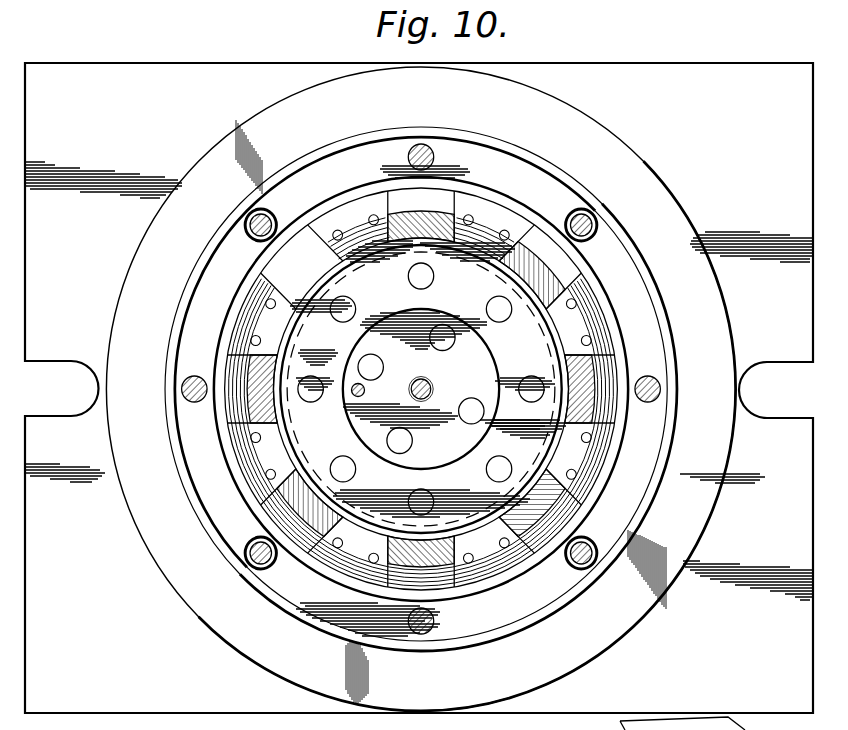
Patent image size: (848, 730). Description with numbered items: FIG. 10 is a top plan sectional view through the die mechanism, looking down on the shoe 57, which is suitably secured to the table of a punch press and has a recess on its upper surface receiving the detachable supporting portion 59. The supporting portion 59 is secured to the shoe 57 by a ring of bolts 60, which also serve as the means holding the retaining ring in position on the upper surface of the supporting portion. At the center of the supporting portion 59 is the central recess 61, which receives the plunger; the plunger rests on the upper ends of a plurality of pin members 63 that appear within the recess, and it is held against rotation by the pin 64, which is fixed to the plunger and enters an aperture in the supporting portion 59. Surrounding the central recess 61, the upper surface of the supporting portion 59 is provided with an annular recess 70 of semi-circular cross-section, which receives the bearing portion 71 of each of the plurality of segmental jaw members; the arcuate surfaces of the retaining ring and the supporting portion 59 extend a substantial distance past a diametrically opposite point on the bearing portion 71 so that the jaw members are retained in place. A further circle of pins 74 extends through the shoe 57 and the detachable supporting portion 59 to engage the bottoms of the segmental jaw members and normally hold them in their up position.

The shoe 57 is at (419, 396).
The detachable supporting portion 59 is at (661, 321).
The bolts 60 is at (422, 146).
The central recess 61 is at (492, 363).
The pin members 63 is at (441, 335).
The pin 64 is at (355, 393).
The annular recess 70 is at (503, 575).
The bearing portion 71 is at (441, 206).
The pins 74 is at (313, 385).